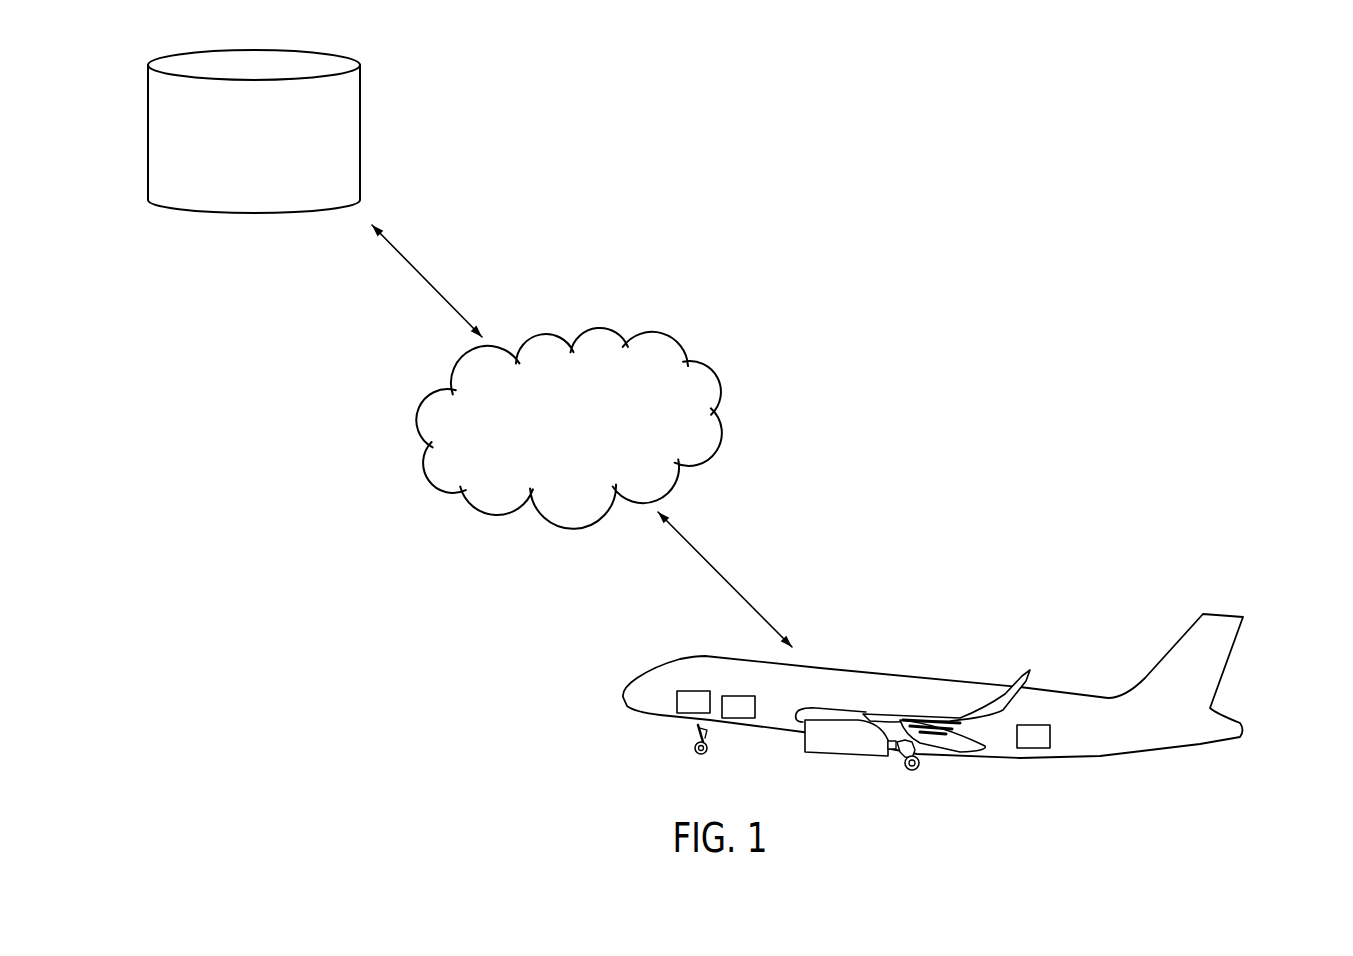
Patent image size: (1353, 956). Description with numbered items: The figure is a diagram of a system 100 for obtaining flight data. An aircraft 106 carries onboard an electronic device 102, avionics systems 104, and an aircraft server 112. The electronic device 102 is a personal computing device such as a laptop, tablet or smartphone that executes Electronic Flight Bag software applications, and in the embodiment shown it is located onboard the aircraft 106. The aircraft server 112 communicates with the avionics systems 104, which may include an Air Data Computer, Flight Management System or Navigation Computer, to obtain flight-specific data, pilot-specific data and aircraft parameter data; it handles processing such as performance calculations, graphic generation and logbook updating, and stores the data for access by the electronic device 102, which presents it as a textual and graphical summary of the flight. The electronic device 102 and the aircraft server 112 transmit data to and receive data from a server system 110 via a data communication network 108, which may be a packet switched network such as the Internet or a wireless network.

The system 100 is at (978, 220).
The electronic device 102 is at (683, 713).
The avionics systems 104 is at (738, 718).
The aircraft 106 is at (960, 709).
The data communication network 108 is at (655, 335).
The server system 110 is at (360, 137).
The aircraft server 112 is at (1030, 748).